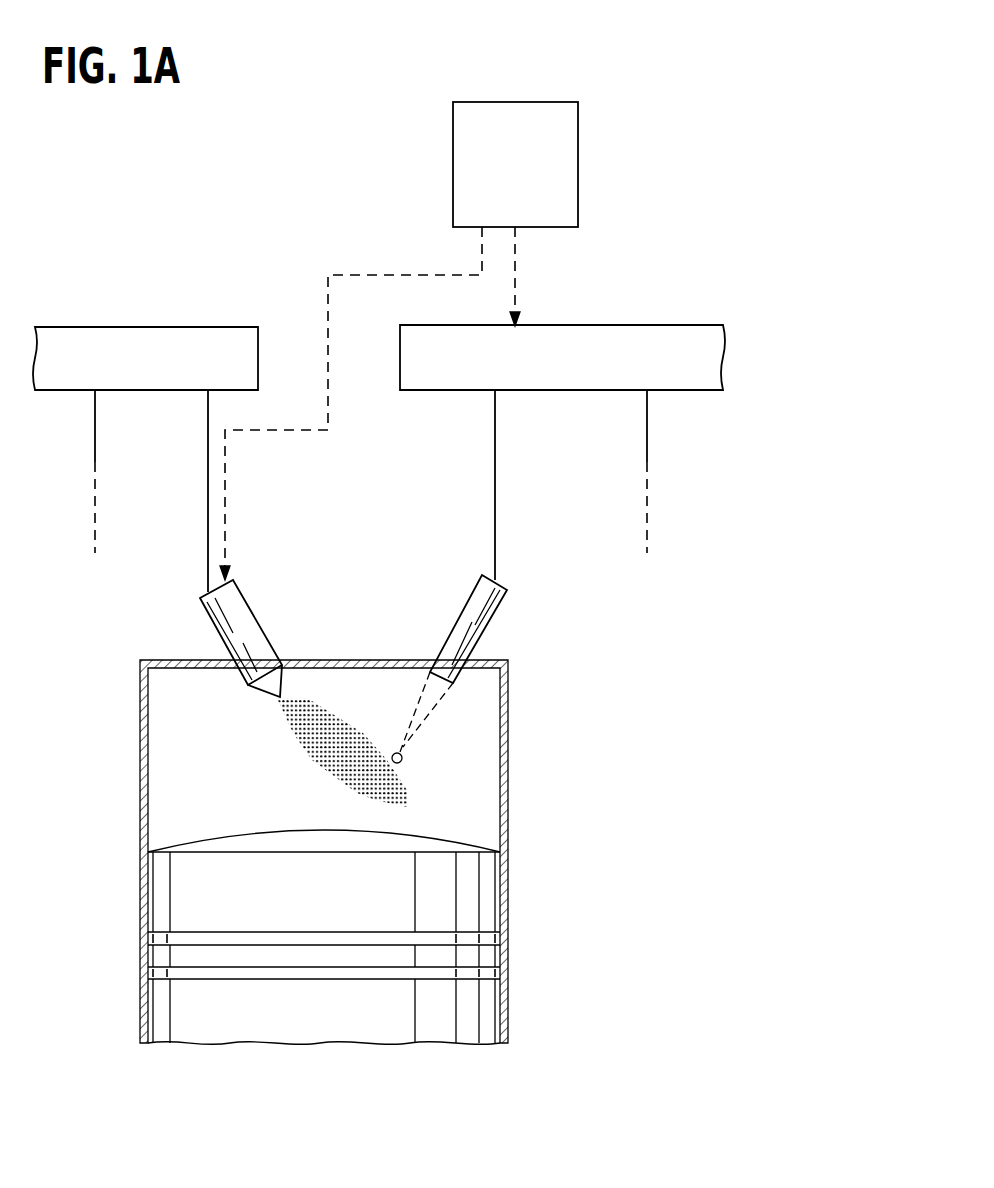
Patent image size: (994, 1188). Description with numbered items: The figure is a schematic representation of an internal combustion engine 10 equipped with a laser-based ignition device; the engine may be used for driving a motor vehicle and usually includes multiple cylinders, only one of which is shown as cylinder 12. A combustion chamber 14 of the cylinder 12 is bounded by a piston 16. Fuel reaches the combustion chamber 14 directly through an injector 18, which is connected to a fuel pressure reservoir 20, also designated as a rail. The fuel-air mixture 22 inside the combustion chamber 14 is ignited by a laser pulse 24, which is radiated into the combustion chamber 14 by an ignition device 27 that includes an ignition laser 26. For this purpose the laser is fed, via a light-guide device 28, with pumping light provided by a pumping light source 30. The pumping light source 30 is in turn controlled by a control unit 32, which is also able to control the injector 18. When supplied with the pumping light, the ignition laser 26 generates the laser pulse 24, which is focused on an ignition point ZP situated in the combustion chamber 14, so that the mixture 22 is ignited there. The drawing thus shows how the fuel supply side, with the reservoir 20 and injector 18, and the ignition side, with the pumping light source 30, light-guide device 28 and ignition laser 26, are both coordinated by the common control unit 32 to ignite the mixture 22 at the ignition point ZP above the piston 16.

The internal combustion engine 10 is at (573, 897).
The cylinder 12 is at (508, 808).
The combustion chamber 14 is at (188, 746).
The piston 16 is at (188, 895).
The injector 18 is at (238, 622).
The fuel pressure reservoir 20 is at (148, 342).
The fuel-air mixture 22 is at (330, 727).
The laser pulse 24 is at (420, 722).
The ignition laser 26 is at (472, 625).
The ignition device 27 is at (630, 190).
The light-guide device 28 is at (495, 485).
The pumping light source 30 is at (672, 340).
The control unit 32 is at (517, 118).
The ignition point ZP is at (402, 760).